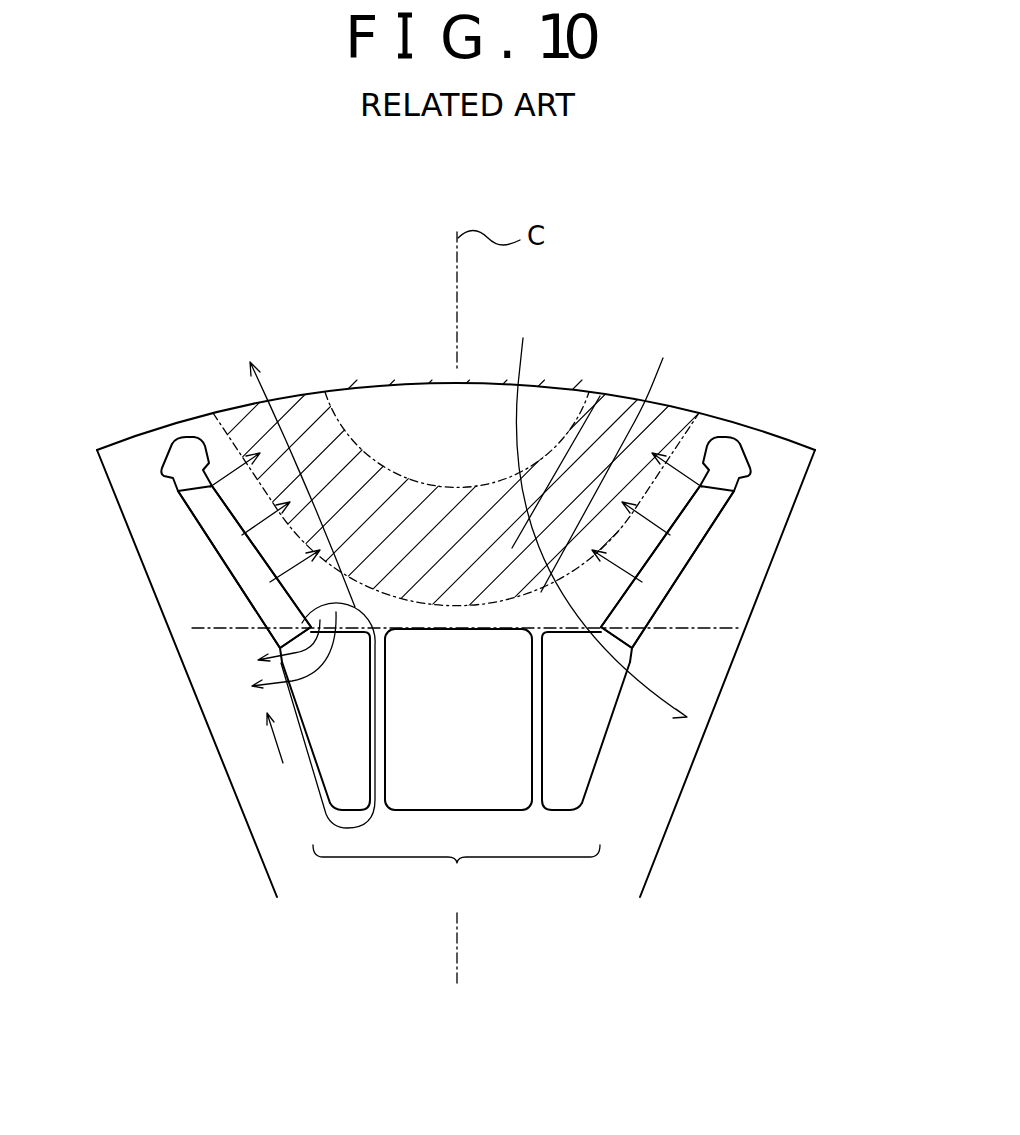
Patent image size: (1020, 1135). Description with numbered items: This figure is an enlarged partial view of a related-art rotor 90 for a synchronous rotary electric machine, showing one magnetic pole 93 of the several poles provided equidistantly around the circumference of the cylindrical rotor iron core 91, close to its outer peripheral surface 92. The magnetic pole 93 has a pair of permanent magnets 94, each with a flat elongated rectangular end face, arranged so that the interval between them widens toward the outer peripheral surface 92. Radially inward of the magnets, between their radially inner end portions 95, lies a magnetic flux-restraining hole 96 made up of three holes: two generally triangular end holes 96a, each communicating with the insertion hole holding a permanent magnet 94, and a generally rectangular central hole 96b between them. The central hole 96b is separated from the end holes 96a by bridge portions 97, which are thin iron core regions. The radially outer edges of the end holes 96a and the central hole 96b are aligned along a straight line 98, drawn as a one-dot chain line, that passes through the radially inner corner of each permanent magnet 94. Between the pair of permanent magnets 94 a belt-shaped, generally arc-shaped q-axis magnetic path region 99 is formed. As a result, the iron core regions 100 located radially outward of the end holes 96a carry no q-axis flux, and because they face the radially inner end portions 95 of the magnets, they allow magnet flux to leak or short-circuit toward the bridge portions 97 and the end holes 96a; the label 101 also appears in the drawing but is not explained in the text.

The rotor 90 is at (460, 562).
The cylindrical rotor iron core 91 is at (801, 525).
The outer peripheral surface 92 is at (768, 428).
The magnetic pole 93 is at (420, 390).
The permanent magnet 94 is at (186, 531).
The radially inner end portion 95 is at (274, 640).
The magnetic flux-restraining hole 96 is at (198, 590).
The end hole 96a is at (456, 721).
The central hole 96b is at (458, 719).
The bridge portion 97 is at (378, 738).
The straight line 98 is at (735, 628).
The q-axis magnetic path region 99 is at (382, 468).
The iron core region 100 is at (346, 620).
The gap 101 is at (681, 578).